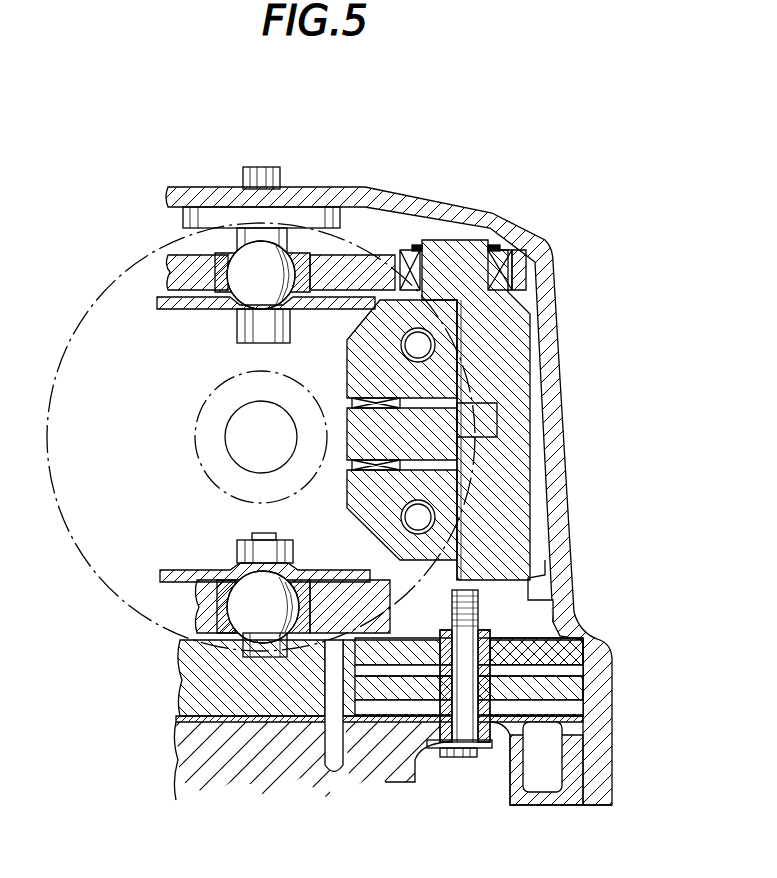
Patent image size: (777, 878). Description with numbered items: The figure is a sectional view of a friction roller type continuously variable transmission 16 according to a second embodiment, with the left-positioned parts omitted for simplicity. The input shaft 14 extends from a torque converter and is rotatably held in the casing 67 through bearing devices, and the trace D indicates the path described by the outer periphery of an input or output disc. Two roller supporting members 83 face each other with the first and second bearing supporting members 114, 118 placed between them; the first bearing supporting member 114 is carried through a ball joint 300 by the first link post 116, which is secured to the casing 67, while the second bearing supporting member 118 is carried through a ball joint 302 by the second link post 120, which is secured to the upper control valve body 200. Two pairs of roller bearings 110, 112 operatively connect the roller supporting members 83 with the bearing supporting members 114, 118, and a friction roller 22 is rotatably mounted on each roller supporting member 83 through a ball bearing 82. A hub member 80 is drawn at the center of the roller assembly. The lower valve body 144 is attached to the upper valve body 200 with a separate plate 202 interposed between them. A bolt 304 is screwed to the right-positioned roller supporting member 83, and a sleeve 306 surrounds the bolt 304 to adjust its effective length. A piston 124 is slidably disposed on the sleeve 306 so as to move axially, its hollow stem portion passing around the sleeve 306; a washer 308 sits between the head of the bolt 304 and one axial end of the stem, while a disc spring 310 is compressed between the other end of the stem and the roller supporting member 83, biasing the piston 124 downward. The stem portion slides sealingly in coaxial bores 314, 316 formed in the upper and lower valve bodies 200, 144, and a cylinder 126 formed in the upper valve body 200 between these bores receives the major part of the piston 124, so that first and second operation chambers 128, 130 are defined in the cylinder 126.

The friction roller type continuously variable transmission 16 is at (562, 158).
The casing 67 is at (205, 187).
The first link post 116 is at (288, 243).
The first bearing supporting member 114 is at (398, 250).
The ball joint 300 is at (240, 262).
The roller bearing 110 is at (530, 250).
The ball bearing 82 is at (425, 345).
The roller supporting member 83 is at (515, 385).
The input shaft 14 is at (225, 440).
The hub member 80 is at (352, 462).
The friction roller 22 is at (356, 512).
The disc spring 310 is at (528, 572).
The trace D is at (62, 546).
The second bearing supporting member 118 is at (215, 600).
The ball joint 302 is at (250, 630).
The second link post 120 is at (195, 678).
The upper control valve body 200 is at (190, 712).
The lower valve body 144 is at (190, 762).
The separate plate 202 is at (260, 725).
The roller bearing 112 is at (578, 632).
The bore 314 is at (560, 650).
The cylinder 126 is at (565, 670).
The first operation chamber 128 is at (565, 688).
The piston 124 is at (565, 706).
The second operation chamber 130 is at (565, 719).
The bore 316 is at (520, 735).
The bolt 304 is at (445, 754).
The sleeve 306 is at (470, 758).
The washer 308 is at (490, 742).